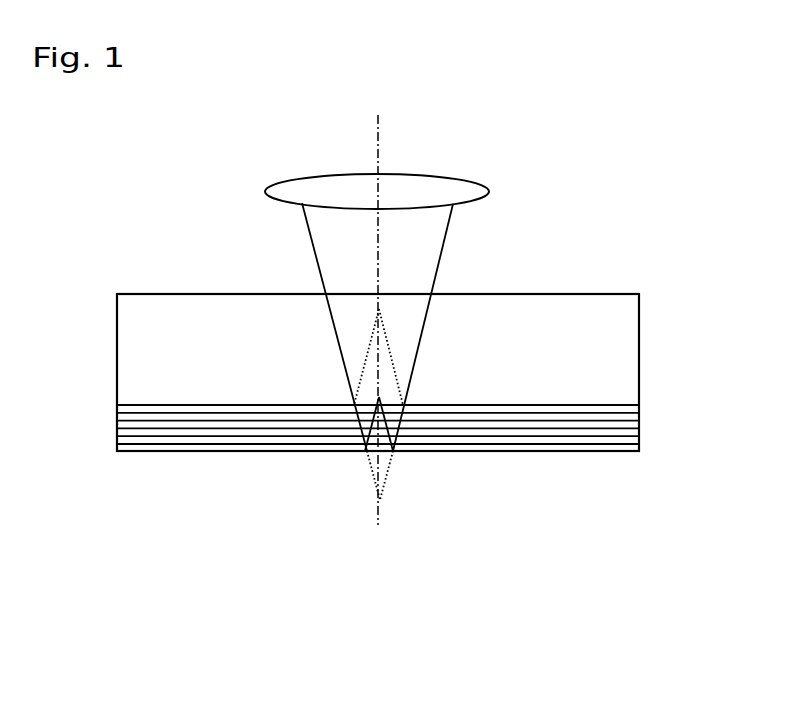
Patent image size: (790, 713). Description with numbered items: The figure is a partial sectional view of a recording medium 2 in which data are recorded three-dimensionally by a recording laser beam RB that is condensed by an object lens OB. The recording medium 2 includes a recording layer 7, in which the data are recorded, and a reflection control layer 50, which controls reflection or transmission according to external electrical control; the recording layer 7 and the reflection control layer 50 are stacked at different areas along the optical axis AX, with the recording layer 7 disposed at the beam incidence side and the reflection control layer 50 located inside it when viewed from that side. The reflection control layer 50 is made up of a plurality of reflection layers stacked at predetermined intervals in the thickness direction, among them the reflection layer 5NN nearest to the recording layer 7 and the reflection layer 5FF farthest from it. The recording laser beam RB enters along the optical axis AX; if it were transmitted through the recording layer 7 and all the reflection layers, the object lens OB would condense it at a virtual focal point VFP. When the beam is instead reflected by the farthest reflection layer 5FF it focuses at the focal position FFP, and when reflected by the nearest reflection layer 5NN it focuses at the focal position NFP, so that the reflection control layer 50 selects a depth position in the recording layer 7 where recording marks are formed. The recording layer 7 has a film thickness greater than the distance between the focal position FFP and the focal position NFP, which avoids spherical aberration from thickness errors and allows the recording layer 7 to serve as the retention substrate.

The recording medium 2 is at (371, 339).
The recording layer 7 is at (639, 353).
The reflection control layer 50 is at (639, 410).
The reflection layer nearest to the recording layer 5NN is at (117, 405).
The reflection layer farthest from the recording layer 5FF is at (117, 451).
The optical axis AX is at (373, 303).
The object lens OB is at (467, 188).
The recording laser beam RB is at (303, 223).
The focal position (nearest reflection layer) NFP is at (379, 309).
The focal position (farthest reflection layer) FFP is at (379, 397).
The virtual focal point VFP is at (380, 500).